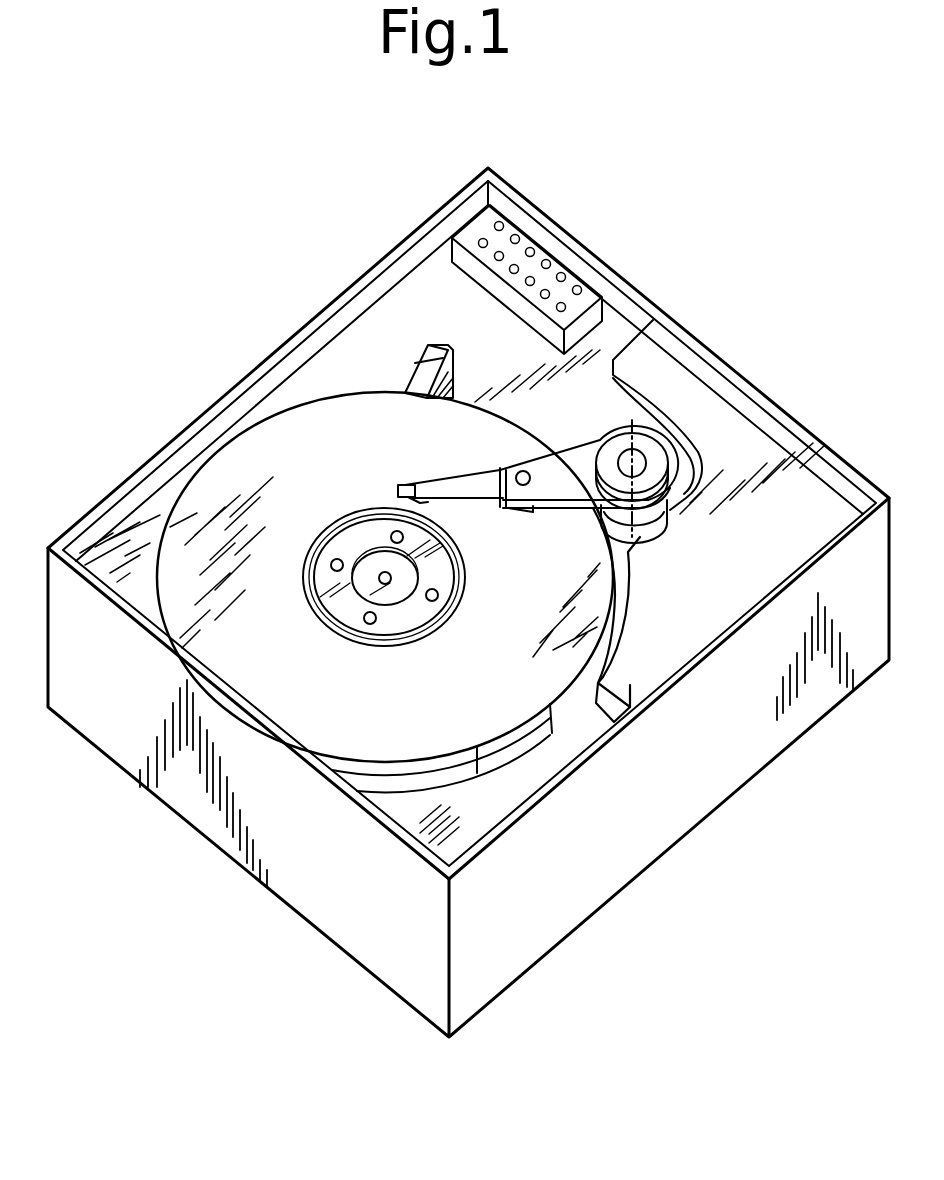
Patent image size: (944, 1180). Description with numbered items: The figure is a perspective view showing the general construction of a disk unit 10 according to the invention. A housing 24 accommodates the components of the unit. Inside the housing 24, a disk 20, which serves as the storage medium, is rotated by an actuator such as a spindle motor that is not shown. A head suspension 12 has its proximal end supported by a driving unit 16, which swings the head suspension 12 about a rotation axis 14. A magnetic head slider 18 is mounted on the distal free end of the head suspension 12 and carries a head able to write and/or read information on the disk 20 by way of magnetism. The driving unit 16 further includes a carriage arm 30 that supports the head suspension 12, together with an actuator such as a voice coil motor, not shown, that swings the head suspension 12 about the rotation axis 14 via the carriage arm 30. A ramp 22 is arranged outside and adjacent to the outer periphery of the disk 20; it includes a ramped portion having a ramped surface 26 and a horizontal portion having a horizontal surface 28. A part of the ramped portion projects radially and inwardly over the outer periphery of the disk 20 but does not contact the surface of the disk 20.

The disk unit 10 is at (328, 192).
The head suspension 12 is at (437, 472).
The rotation axis 14 is at (650, 420).
The driving unit 16 is at (682, 483).
The magnetic head slider 18 is at (398, 488).
The disk 20 is at (460, 722).
The ramp 22 is at (430, 345).
The housing 24 is at (700, 790).
The ramped surface 26 is at (418, 378).
The horizontal surface 28 is at (455, 399).
The carriage arm 30 is at (567, 460).